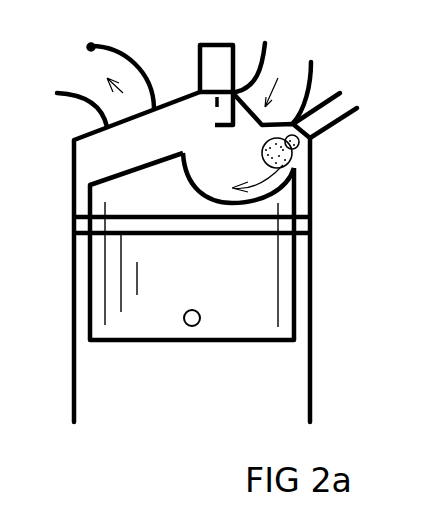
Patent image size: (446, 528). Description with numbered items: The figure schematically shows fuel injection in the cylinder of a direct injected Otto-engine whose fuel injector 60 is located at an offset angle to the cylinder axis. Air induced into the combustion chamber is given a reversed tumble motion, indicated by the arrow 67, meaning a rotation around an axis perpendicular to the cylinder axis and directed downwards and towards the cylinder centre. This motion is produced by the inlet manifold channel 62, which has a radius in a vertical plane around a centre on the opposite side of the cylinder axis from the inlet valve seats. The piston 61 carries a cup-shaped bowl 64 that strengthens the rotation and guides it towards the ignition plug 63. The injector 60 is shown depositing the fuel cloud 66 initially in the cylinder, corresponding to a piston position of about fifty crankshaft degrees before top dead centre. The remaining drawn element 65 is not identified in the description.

The fuel injector 60 is at (317, 125).
The piston 61 is at (238, 288).
The inlet manifold channel 62 is at (309, 77).
The ignition plug 63 is at (207, 44).
The cup-shaped bowl 64 is at (223, 198).
The exhaust valve 65 is at (118, 58).
The fuel cloud 66 is at (293, 170).
The arrow 67 is at (277, 195).